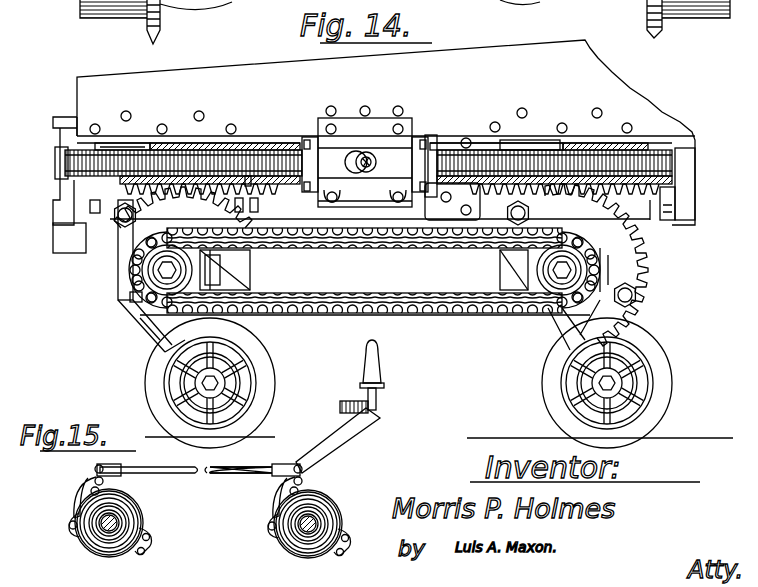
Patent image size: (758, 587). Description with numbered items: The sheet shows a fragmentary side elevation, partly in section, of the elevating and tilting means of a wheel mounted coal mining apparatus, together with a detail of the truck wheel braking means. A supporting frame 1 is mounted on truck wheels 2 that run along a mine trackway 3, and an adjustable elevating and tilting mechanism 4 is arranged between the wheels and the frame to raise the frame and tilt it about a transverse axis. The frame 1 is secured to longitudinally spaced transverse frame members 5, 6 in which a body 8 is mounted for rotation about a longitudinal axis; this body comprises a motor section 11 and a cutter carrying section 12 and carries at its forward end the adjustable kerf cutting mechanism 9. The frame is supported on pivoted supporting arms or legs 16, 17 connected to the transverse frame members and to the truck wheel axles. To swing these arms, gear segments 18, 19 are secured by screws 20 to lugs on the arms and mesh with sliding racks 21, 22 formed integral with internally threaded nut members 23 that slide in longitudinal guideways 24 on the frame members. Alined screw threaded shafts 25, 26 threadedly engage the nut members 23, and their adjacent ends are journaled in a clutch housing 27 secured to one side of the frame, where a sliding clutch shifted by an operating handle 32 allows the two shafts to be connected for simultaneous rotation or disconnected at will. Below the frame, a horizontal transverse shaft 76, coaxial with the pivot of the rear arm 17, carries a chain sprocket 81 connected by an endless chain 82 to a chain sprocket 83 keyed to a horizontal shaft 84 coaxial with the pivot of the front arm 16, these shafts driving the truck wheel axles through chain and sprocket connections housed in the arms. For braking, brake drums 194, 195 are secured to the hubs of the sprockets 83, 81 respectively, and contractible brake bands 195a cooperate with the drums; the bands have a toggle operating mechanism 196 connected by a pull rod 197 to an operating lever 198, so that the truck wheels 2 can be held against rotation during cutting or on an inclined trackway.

In FIG. 14, the supporting frame 1 is at (488, 52).
In FIG. 14, the truck wheels 2 is at (270, 372).
In FIG. 14, the mine trackway 3 is at (678, 436).
In FIG. 14, the elevating and tilting mechanism 4 is at (141, 329).
In FIG. 14, the transverse frame member 5 is at (124, 262).
In FIG. 14, the transverse frame member 6 is at (520, 262).
In FIG. 14, the body 8 is at (365, 221).
In FIG. 14, the kerf cutting mechanism 9 is at (46, 168).
In FIG. 14, the motor section 11 is at (395, 212).
In FIG. 14, the cutter carrying section 12 is at (60, 215).
In FIG. 14, the supporting arm 16 is at (162, 333).
In FIG. 14, the supporting arm 17 is at (548, 315).
In FIG. 14, the gear segment 18 is at (256, 268).
In FIG. 14, the gear segment 19 is at (640, 242).
In FIG. 14, the screws 20 is at (123, 217).
In FIG. 14, the sliding rack 21 is at (257, 192).
In FIG. 14, the sliding rack 22 is at (647, 190).
In FIG. 14, the nut members 23 is at (206, 145).
In FIG. 14, the longitudinal guideways 24 is at (122, 147).
In FIG. 14, the screw threaded shaft 25 is at (250, 158).
In FIG. 14, the screw threaded shaft 26 is at (560, 160).
In FIG. 14, the clutch housing 27 is at (372, 128).
In FIG. 14, the operating handle 32 is at (378, 157).
In FIG. 15, the transverse shaft 76 is at (298, 530).
In FIG. 14, the chain sprocket 81 is at (515, 302).
In FIG. 15, the chain sprocket 81 is at (306, 541).
In FIG. 14, the endless chain 82 is at (447, 302).
In FIG. 14, the chain sprocket 83 is at (256, 291).
In FIG. 15, the chain sprocket 83 is at (106, 540).
In FIG. 14, the horizontal shaft 84 is at (128, 297).
In FIG. 15, the horizontal shaft 84 is at (125, 527).
In FIG. 15, the brake drum 194 is at (88, 543).
In FIG. 15, the brake drum 195 is at (290, 546).
In FIG. 15, the contractible brake bands 195a is at (140, 510).
In FIG. 15, the toggle operating mechanism 196 is at (90, 482).
In FIG. 15, the pull rod 197 is at (226, 470).
In FIG. 15, the operating lever 198 is at (378, 380).